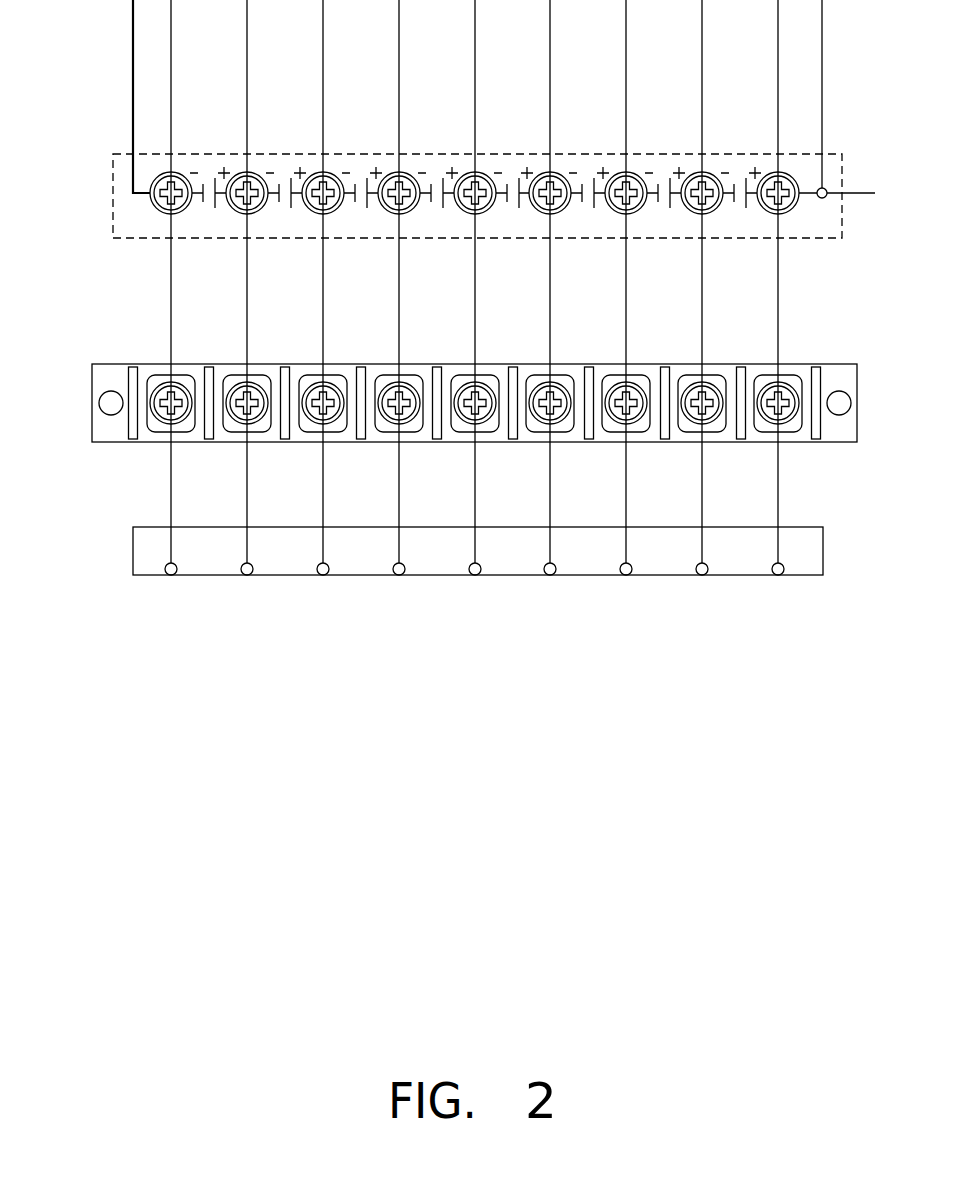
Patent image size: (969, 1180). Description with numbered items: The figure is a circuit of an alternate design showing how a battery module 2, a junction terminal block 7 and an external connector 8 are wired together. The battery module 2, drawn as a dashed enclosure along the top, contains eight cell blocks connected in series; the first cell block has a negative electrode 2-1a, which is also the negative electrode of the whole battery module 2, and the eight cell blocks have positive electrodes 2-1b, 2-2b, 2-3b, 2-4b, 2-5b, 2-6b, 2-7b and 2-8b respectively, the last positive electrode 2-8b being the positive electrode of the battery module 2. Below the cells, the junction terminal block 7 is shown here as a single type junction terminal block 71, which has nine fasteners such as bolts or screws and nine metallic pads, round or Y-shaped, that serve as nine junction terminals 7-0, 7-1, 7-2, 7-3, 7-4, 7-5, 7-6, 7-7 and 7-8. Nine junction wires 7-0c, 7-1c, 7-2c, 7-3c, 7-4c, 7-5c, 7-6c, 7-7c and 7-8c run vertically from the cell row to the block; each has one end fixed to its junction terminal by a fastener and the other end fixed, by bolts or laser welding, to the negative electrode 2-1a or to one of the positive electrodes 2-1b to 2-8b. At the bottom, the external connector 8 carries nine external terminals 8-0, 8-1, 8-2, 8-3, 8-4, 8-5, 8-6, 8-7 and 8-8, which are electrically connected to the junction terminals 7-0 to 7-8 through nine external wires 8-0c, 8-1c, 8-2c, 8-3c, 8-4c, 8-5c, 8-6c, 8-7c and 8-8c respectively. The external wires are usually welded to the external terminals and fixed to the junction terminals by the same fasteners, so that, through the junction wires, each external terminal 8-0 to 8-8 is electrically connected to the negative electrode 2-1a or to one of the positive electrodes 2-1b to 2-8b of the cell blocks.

The battery module 2 is at (112, 140).
The negative electrode 2-1a is at (184, 177).
The positive electrode 2-1b is at (260, 177).
The positive electrode 2-2b is at (336, 177).
The positive electrode 2-3b is at (412, 177).
The positive electrode 2-4b is at (488, 177).
The positive electrode 2-5b is at (563, 177).
The positive electrode 2-6b is at (639, 177).
The positive electrode 2-7b is at (715, 177).
The positive electrode 2-8b is at (788, 177).
The junction terminal block 7 is at (101, 350).
The single type junction terminal block 71 is at (133, 392).
The junction terminal 7-0 is at (162, 377).
The junction terminal 7-1 is at (238, 377).
The junction terminal 7-2 is at (314, 377).
The junction terminal 7-3 is at (390, 377).
The junction terminal 7-4 is at (466, 377).
The junction terminal 7-5 is at (541, 377).
The junction terminal 7-6 is at (617, 377).
The junction terminal 7-7 is at (693, 377).
The junction terminal 7-8 is at (769, 377).
The junction wire 7-0c is at (171, 284).
The junction wire 7-1c is at (247, 284).
The junction wire 7-2c is at (323, 284).
The junction wire 7-3c is at (399, 284).
The junction wire 7-4c is at (475, 284).
The junction wire 7-5c is at (550, 284).
The junction wire 7-6c is at (626, 284).
The junction wire 7-7c is at (702, 284).
The junction wire 7-8c is at (778, 284).
The external connector 8 is at (129, 517).
The external terminal 8-0 is at (167, 576).
The external terminal 8-1 is at (243, 576).
The external terminal 8-2 is at (319, 576).
The external terminal 8-3 is at (395, 576).
The external terminal 8-4 is at (471, 576).
The external terminal 8-5 is at (546, 576).
The external terminal 8-6 is at (622, 576).
The external terminal 8-7 is at (698, 576).
The external terminal 8-8 is at (774, 576).
The external wire 8-0c is at (173, 504).
The external wire 8-1c is at (249, 504).
The external wire 8-2c is at (325, 504).
The external wire 8-3c is at (401, 504).
The external wire 8-4c is at (477, 504).
The external wire 8-5c is at (552, 504).
The external wire 8-6c is at (628, 504).
The external wire 8-7c is at (704, 504).
The external wire 8-8c is at (780, 504).